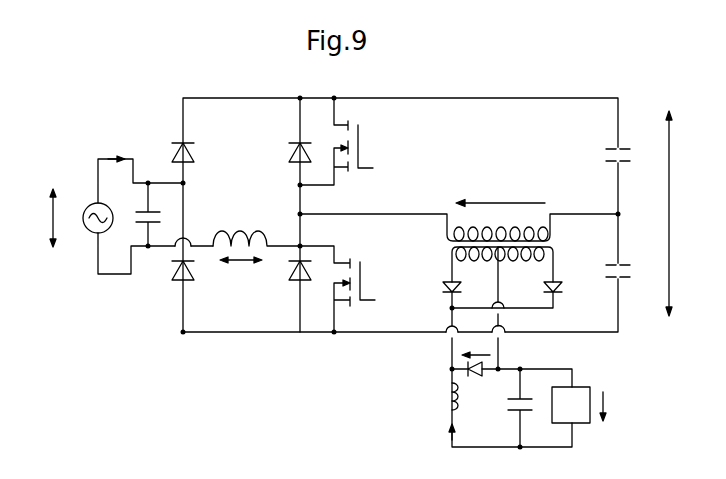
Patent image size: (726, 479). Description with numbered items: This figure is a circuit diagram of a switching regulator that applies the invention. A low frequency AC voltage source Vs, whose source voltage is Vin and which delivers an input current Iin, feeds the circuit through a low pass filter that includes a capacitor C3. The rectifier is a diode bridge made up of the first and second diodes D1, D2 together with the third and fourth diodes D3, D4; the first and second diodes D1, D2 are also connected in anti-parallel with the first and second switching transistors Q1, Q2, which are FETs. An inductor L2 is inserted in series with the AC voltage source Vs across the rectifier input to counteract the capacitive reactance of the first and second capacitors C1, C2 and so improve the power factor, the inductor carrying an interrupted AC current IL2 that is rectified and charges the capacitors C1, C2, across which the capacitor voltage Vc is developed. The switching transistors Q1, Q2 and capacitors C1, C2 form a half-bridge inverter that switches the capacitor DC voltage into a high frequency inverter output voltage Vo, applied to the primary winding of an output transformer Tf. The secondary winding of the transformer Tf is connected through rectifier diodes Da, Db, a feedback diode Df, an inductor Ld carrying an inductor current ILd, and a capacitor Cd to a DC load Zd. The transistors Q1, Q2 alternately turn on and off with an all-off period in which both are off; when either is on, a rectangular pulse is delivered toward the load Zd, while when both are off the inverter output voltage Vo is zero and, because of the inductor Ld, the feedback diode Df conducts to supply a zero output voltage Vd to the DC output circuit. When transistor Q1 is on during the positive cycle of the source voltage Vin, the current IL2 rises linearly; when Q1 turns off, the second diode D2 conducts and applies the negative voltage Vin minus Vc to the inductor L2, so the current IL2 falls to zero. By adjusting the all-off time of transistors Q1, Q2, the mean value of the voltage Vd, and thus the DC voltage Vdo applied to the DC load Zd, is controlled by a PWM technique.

The AC voltage source Vs is at (85, 209).
The source voltage Vin is at (37, 218).
The input current Iin is at (117, 149).
The capacitor C3 is at (137, 214).
The third diode D3 is at (198, 155).
The first diode D1 is at (284, 155).
The fourth diode D4 is at (198, 283).
The second diode D2 is at (287, 284).
The inductor L2 is at (256, 225).
The interrupted AC current IL2 is at (241, 272).
The first switching transistor Q1 is at (336, 146).
The second switching transistor Q2 is at (337, 281).
The inverter output voltage Vo is at (500, 192).
The output transformer Tf is at (515, 254).
The rectifier diode Da is at (466, 293).
The rectifier diode Db is at (568, 293).
The first capacitor C1 is at (630, 169).
The second capacitor C2 is at (631, 268).
The capacitor voltage Vc is at (683, 213).
The output voltage Vd is at (475, 346).
The feedback diode Df is at (477, 382).
The inductor Ld is at (434, 398).
The inductor current ILd is at (433, 433).
The capacitor Cd is at (507, 408).
The DC load Zd is at (576, 387).
The DC voltage Vdo is at (624, 408).